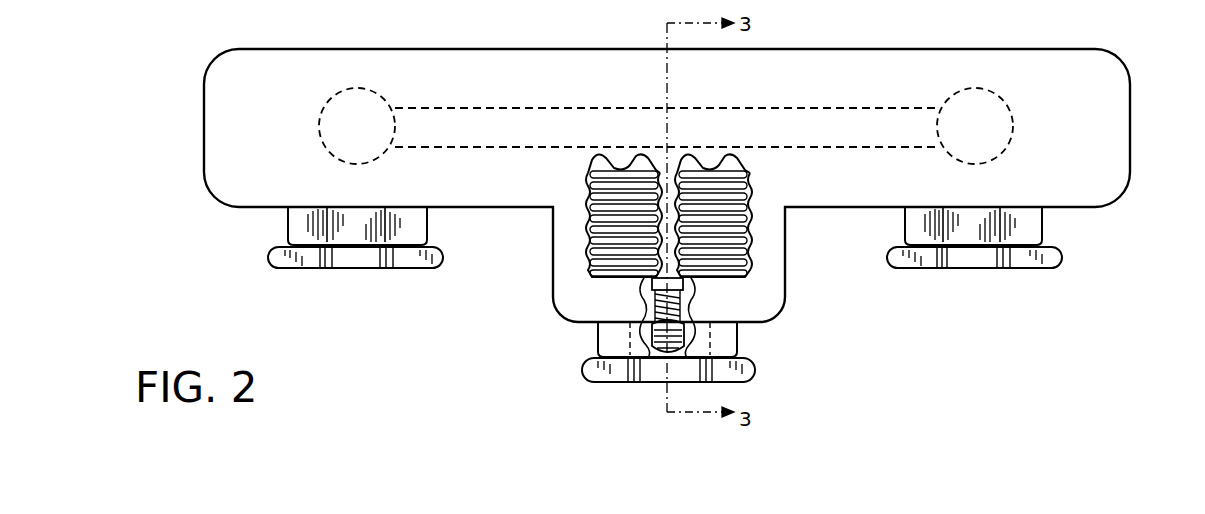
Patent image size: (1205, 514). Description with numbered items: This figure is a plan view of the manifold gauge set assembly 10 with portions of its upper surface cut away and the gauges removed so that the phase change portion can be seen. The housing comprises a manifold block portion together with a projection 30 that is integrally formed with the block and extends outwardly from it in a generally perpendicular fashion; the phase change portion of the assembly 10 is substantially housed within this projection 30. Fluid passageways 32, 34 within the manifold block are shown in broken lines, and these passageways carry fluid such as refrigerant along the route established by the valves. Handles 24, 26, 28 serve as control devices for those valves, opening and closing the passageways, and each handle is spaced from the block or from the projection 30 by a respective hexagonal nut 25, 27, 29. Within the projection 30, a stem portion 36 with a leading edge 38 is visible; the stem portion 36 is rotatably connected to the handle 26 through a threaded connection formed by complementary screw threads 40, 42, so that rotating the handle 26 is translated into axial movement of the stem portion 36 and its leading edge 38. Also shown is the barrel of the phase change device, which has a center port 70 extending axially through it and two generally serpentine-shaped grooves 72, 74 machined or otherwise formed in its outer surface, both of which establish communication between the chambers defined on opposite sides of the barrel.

The manifold gauge set assembly 10 is at (383, 311).
The handle 24 is at (268, 253).
The hexagonal nut 25 is at (290, 222).
The handle 26 is at (757, 373).
The hexagonal nut 27 is at (598, 338).
The handle 28 is at (1026, 268).
The hexagonal nut 29 is at (1042, 222).
The projection 30 is at (763, 318).
The fluid passageway 32 is at (468, 118).
The fluid passageway 34 is at (866, 130).
The stem portion 36 is at (657, 318).
The leading edge 38 is at (648, 292).
The screw thread 40 is at (695, 290).
The screw thread 42 is at (662, 345).
The center port 70 is at (663, 217).
The serpentine groove 72 is at (598, 240).
The serpentine groove 74 is at (750, 240).